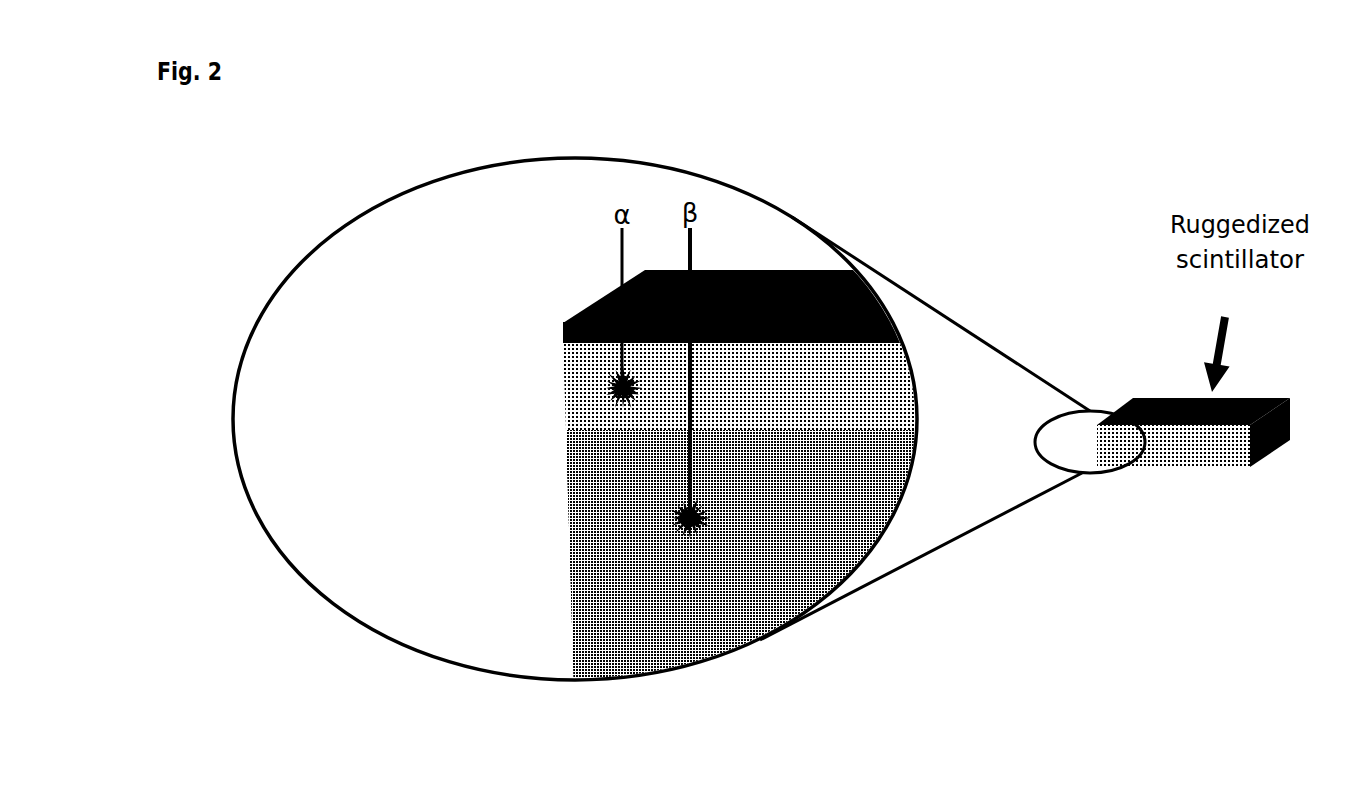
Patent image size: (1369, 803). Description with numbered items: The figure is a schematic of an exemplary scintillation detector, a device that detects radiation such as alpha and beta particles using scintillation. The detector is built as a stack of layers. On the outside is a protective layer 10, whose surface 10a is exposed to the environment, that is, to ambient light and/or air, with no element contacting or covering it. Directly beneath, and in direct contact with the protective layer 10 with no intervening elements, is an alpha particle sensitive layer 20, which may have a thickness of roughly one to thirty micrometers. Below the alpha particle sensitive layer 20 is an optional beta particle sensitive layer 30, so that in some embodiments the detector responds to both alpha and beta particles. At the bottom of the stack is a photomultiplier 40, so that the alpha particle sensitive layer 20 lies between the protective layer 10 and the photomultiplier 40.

The surface 10a is at (701, 296).
The protective layer 10 is at (678, 337).
The alpha particle sensitive layer 20 is at (680, 386).
The beta particle sensitive layer 30 is at (662, 560).
The photomultiplier 40 is at (690, 560).